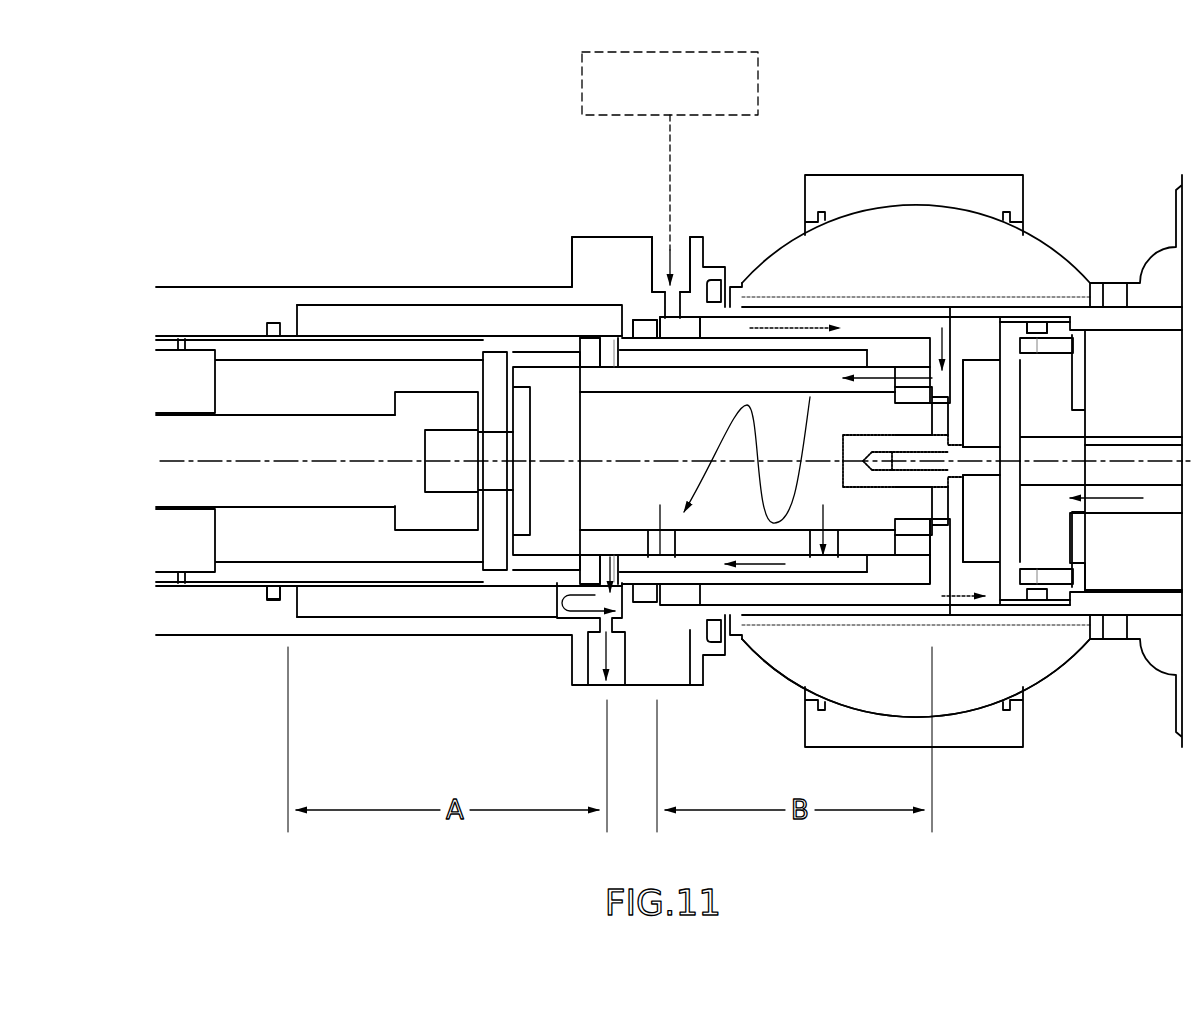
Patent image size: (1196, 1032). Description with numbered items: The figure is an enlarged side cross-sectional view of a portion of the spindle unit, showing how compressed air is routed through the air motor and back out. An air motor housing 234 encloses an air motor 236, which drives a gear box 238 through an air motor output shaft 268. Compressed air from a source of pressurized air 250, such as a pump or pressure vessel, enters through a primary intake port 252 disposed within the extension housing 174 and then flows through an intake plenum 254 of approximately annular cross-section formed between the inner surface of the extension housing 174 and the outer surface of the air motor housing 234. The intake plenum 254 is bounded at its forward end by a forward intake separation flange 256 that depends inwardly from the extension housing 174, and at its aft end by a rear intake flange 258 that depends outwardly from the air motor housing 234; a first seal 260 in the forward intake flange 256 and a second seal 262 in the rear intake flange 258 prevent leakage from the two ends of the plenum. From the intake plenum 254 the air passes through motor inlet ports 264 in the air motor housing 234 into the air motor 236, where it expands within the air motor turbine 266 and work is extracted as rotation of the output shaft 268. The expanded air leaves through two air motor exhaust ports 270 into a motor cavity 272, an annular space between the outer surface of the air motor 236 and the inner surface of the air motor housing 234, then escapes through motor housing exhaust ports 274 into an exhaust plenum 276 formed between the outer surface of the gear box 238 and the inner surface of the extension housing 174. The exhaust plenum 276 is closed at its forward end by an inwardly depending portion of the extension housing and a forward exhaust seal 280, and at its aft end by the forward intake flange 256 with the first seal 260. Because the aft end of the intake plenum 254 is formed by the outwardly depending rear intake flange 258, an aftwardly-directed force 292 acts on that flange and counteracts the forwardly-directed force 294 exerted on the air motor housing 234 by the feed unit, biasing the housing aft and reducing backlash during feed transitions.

The extension housing 174 is at (338, 283).
The air motor housing 234 is at (685, 345).
The air motor 236 is at (883, 563).
The gear box 238 is at (228, 333).
The source of pressurized air 250 is at (760, 95).
The primary intake port 252 is at (658, 240).
The intake plenum 254 is at (965, 315).
The forward intake separation flange 256 is at (640, 312).
The rear intake flange 258 is at (1032, 307).
The first seal 260 is at (630, 302).
The second seal 262 is at (1010, 330).
The motor inlet ports 264 is at (945, 335).
The air motor turbine 266 is at (756, 471).
The air motor output shaft 268 is at (458, 440).
The air motor exhaust ports 270 is at (668, 550).
The motor cavity 272 is at (795, 358).
The motor housing exhaust ports 274 is at (594, 345).
The exhaust plenum 276 is at (563, 300).
The forward exhaust seal 280 is at (268, 600).
The aftwardly-directed force 292 is at (958, 603).
The forwardly-directed force 294 is at (1130, 507).